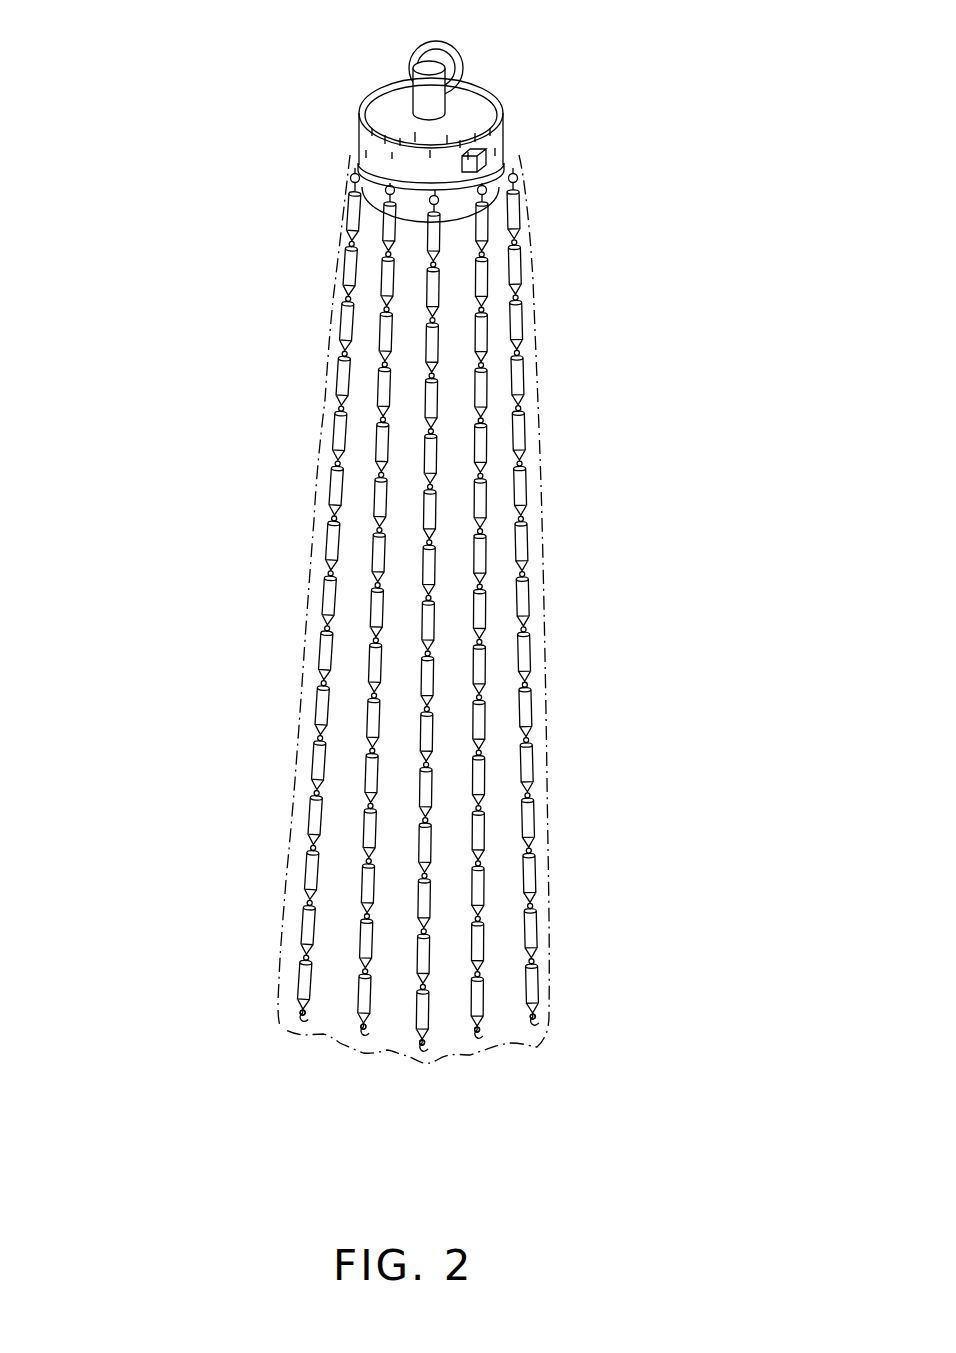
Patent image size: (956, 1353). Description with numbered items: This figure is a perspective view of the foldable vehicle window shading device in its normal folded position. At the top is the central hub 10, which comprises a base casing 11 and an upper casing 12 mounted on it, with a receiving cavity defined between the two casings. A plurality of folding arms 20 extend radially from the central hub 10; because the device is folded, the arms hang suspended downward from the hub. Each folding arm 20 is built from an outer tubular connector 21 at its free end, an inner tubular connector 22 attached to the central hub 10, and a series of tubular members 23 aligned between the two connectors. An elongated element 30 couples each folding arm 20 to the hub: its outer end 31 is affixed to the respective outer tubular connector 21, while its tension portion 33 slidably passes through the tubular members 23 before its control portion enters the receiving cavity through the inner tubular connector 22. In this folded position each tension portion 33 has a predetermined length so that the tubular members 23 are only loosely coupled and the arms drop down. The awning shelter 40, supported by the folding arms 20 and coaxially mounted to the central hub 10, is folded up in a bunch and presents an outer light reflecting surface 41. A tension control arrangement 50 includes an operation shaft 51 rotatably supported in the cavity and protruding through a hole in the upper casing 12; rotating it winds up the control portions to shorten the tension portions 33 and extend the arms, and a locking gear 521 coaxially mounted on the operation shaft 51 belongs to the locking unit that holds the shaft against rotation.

The central hub 10 is at (200, 66).
The base casing 11 is at (408, 203).
The upper casing 12 is at (390, 105).
The folding arm 20 is at (666, 322).
The outer tubular connector 21 is at (537, 988).
The inner tubular connector 22 is at (510, 172).
The tubular member 23 is at (522, 437).
The elongated element 30 is at (724, 594).
The outer end 31 is at (535, 1024).
The tension portion 33 is at (525, 577).
The awning shelter 40 is at (330, 470).
The outer light reflecting surface 41 is at (304, 612).
The tension control arrangement 50 is at (686, 53).
The operation shaft 51 is at (440, 100).
The locking gear 521 is at (507, 155).